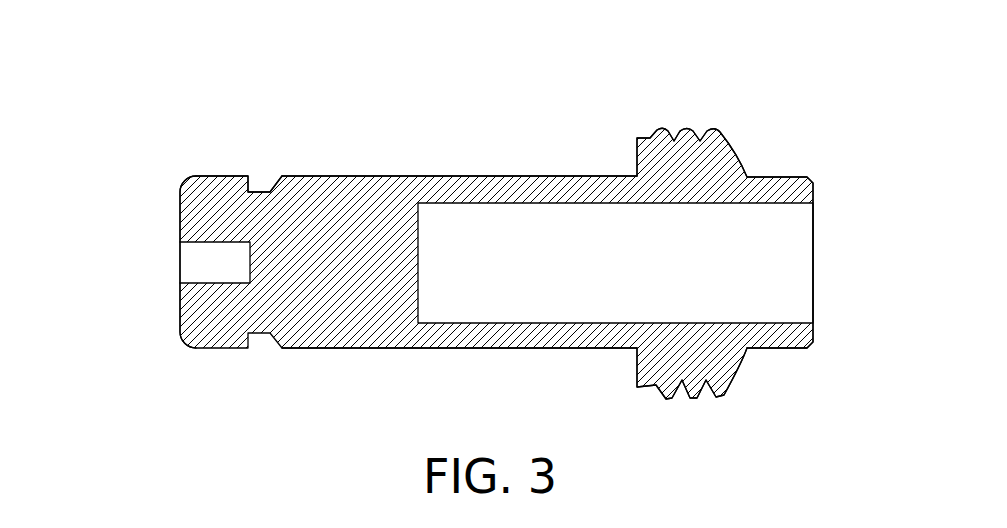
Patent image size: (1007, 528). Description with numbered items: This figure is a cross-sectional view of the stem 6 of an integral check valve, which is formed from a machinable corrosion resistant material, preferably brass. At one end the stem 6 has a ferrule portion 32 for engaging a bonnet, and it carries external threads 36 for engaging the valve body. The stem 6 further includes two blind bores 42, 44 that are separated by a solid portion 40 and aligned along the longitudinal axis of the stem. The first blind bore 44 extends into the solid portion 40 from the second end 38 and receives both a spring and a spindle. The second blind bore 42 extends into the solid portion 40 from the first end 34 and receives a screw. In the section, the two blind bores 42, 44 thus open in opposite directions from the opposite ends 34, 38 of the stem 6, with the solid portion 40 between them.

The stem 6 is at (157, 166).
The ferrule portion 32 is at (225, 177).
The first end 34 is at (180, 306).
The external threads 36 is at (688, 133).
The second end 38 is at (772, 190).
The solid portion 40 is at (352, 213).
The second blind bore 42 is at (215, 263).
The first blind bore 44 is at (760, 262).